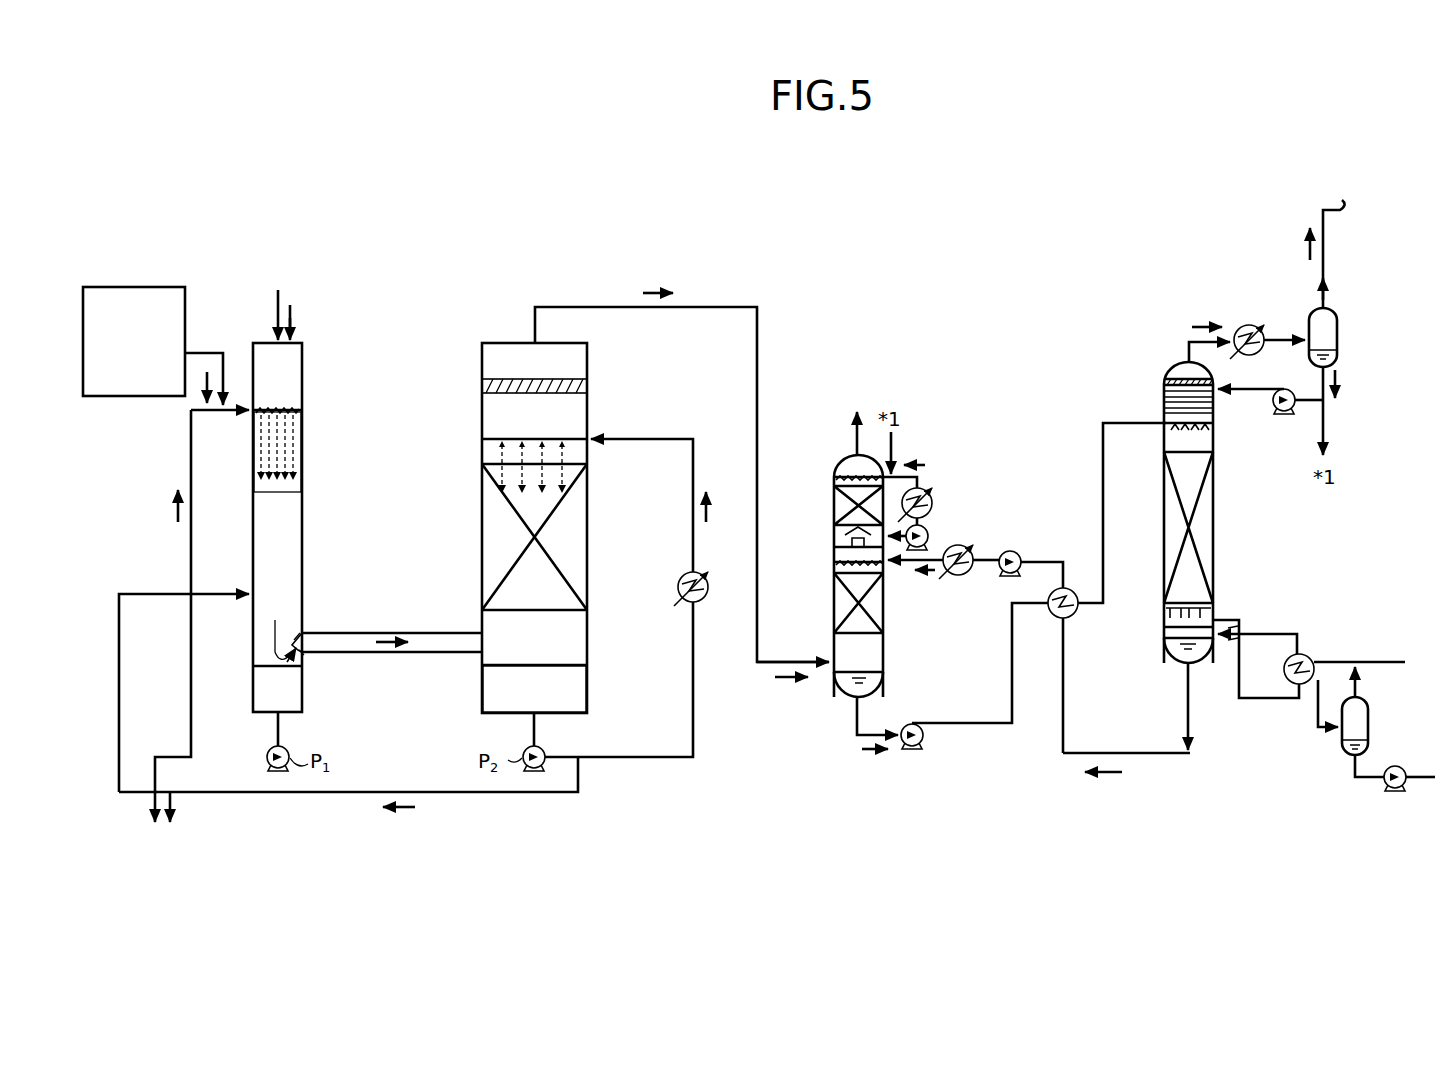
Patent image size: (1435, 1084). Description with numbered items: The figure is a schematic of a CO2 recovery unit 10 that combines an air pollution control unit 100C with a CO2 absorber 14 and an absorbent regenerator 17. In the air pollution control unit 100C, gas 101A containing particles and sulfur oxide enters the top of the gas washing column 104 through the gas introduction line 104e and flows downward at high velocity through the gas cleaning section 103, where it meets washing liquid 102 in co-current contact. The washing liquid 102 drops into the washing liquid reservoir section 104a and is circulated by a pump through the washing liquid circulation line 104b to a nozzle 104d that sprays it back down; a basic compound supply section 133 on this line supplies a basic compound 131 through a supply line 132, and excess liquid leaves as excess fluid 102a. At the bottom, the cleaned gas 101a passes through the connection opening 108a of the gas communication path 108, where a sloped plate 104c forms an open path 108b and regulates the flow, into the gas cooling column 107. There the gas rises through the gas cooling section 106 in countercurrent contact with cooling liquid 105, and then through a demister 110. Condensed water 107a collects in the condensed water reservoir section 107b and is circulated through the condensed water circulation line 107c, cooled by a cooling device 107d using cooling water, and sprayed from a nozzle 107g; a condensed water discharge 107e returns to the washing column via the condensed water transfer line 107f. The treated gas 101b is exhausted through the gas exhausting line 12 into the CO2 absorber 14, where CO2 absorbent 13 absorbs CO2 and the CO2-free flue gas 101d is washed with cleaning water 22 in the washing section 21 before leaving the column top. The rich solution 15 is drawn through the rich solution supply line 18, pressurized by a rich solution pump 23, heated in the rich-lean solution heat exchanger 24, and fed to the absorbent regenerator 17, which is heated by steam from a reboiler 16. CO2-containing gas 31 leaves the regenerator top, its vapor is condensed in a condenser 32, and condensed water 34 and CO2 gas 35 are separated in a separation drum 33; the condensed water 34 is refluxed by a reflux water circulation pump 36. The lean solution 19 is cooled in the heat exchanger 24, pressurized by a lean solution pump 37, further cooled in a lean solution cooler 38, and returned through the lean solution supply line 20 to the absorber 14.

The CO2 recovery unit 10 is at (905, 215).
The gas exhausting line 12 is at (792, 660).
The CO2 absorbent (lean solution) 13 is at (930, 580).
The CO2 absorber 14 is at (862, 450).
The rich solution 15 is at (882, 760).
The reboiler 16 is at (1302, 650).
The absorbent regenerator 17 is at (1180, 358).
The rich solution supply line 18 is at (985, 728).
The lean solution 19 is at (1100, 785).
The lean solution supply line 20 is at (1160, 762).
The washing section 21 is at (840, 505).
The cleaning water 22 is at (915, 468).
The rich solution pump 23 is at (926, 748).
The rich-lean solution heat exchanger 24 is at (1050, 612).
The CO2-containing gas 31 is at (1198, 320).
The condenser 32 is at (1245, 320).
The separation drum 33 is at (1340, 348).
The condensed water 34 is at (1340, 383).
The CO2 gas 35 is at (1305, 240).
The reflux water circulation pump 36 is at (1278, 415).
The lean solution pump 37 is at (1015, 555).
The lean solution cooler 38 is at (965, 580).
The air pollution control unit 100C is at (535, 228).
The gas containing particles and sulfur oxide 101A is at (295, 318).
The cleaned gas 101a is at (385, 632).
The treated gas 101b is at (657, 290).
The CO2-free flue gas 101d is at (852, 420).
The washing liquid 102 is at (305, 450).
The excess fluid 102a is at (180, 800).
The gas cleaning section 103 is at (292, 490).
The gas washing column 104 is at (268, 335).
The washing liquid reservoir section 104a is at (295, 700).
The washing liquid circulation line 104b is at (191, 440).
The sloped plate 104c is at (292, 638).
The nozzle 104d is at (305, 413).
The gas introduction line 104e is at (292, 300).
The cooling liquid 105 is at (580, 455).
The gas cooling section 106 is at (495, 505).
The gas cooling column 107 is at (500, 333).
The condensed water 107a is at (572, 668).
The condensed water reservoir section 107b is at (578, 682).
The condensed water circulation line 107c is at (697, 440).
The cooling device 107d is at (680, 575).
The condensed water discharge 107e is at (400, 815).
The condensed water transfer line 107f is at (520, 795).
The nozzle 107g is at (582, 440).
The gas communication path 108 is at (422, 653).
The connection opening 108a is at (303, 634).
The open path 108b is at (305, 655).
The demister 110 is at (590, 387).
The basic compound 131 is at (200, 385).
The supply line 132 is at (212, 352).
The basic compound supply section 133 is at (135, 287).